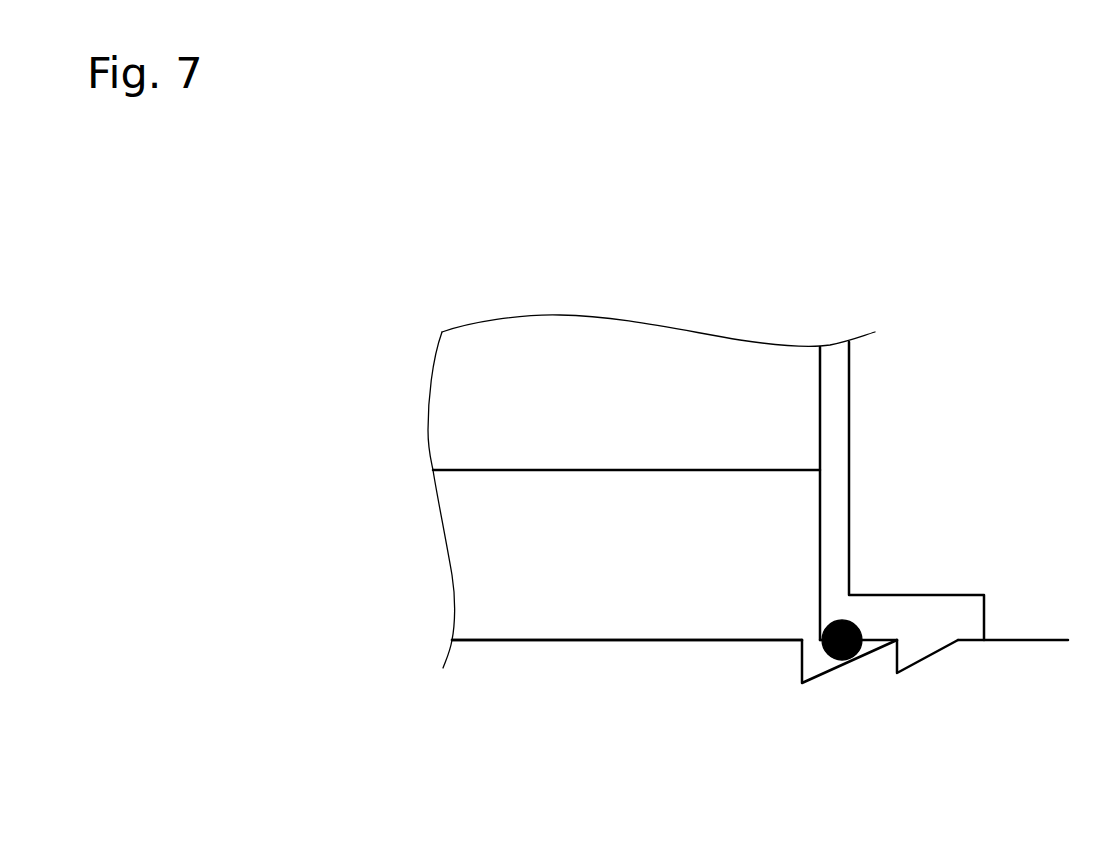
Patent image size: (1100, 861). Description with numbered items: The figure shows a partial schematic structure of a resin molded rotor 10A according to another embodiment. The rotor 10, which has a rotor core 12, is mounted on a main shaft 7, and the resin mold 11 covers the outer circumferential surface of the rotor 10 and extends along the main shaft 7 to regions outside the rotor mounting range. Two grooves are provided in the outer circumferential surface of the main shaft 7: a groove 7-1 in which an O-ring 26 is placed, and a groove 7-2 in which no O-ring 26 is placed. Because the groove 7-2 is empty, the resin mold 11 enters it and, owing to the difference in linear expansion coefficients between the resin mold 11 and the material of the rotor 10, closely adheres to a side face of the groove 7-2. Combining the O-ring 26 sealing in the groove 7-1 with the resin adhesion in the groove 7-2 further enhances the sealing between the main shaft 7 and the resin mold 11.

The resin molded rotor 10A is at (743, 267).
The rotor 10 is at (398, 463).
The resin mold 11 is at (849, 397).
The rotor core 12 is at (485, 578).
The O-ring 26 is at (852, 620).
The main shaft 7 is at (657, 758).
The groove 7-1 is at (825, 670).
The groove 7-2 is at (923, 658).